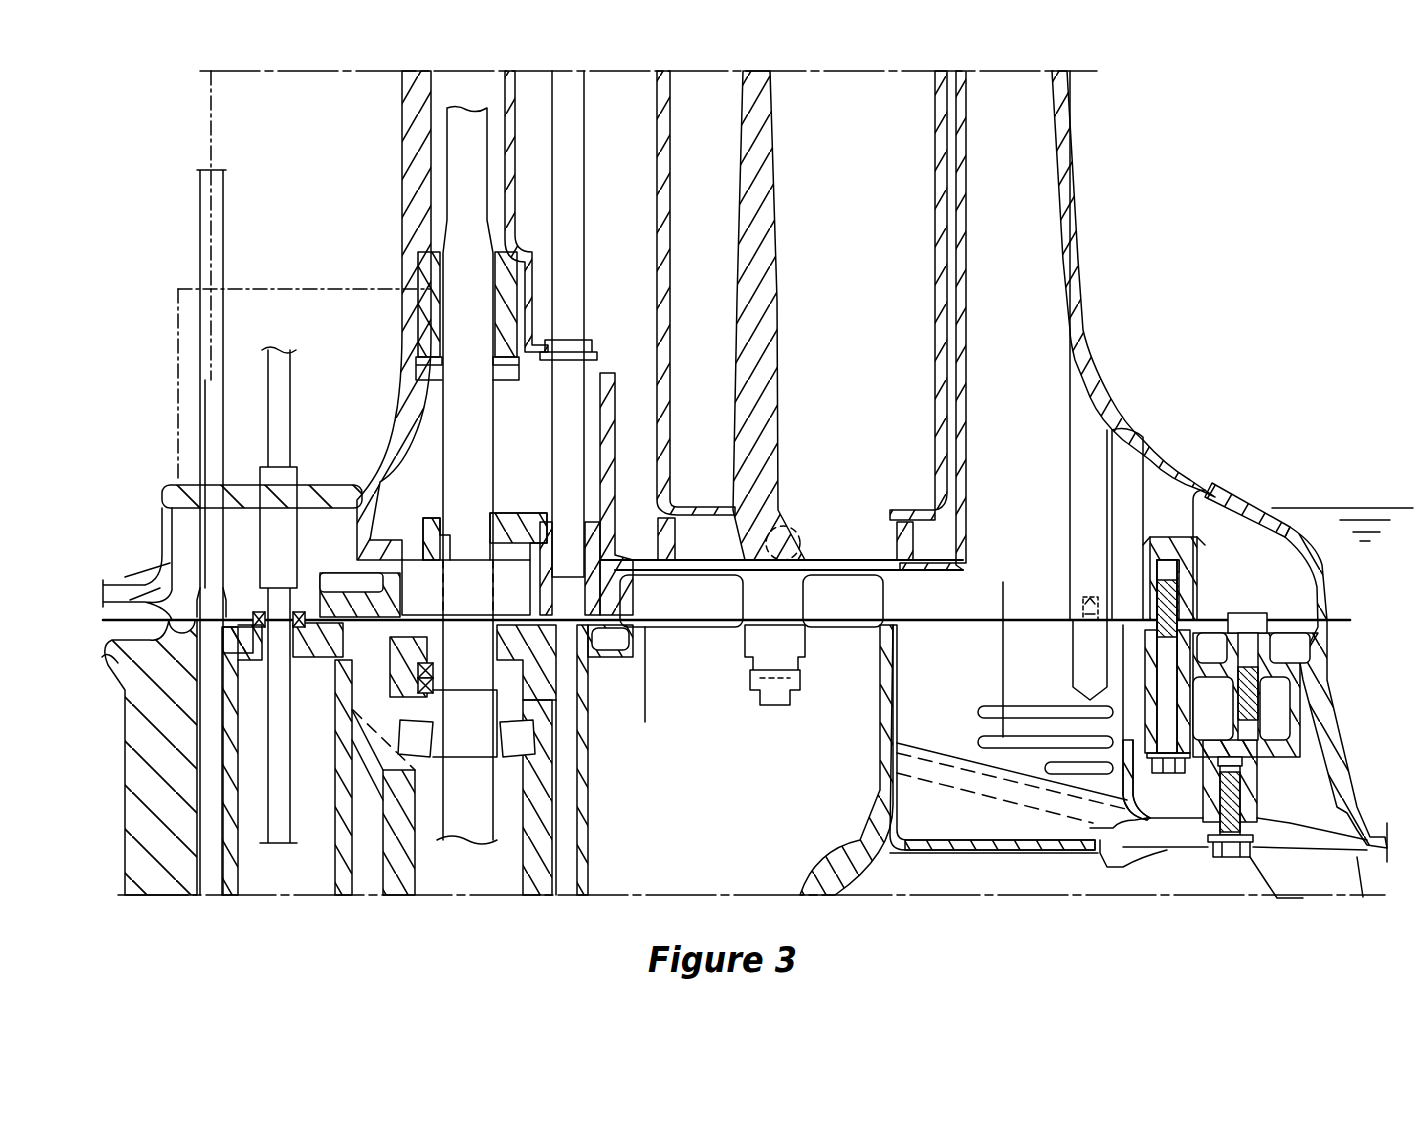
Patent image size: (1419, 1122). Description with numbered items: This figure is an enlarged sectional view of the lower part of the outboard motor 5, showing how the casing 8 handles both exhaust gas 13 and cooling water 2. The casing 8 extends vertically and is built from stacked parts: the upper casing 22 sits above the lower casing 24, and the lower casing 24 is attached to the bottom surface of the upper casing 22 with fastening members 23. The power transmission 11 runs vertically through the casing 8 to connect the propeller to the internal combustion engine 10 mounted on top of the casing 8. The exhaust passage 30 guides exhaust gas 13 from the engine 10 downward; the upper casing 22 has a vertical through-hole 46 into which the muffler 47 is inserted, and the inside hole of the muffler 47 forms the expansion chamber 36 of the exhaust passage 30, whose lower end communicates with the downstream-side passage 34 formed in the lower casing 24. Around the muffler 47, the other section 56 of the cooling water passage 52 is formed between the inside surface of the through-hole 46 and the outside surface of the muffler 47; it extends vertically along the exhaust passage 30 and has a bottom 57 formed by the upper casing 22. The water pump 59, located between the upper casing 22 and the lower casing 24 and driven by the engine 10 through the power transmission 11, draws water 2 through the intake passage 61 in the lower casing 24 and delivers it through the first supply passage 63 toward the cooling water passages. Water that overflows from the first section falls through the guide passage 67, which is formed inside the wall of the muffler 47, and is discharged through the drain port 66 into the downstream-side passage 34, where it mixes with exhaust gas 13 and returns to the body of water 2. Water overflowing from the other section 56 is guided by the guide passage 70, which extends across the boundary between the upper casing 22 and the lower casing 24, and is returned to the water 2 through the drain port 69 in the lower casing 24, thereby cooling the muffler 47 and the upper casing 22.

The water 2 is at (1335, 508).
The outboard motor 5 is at (1294, 160).
The casing 8 is at (1268, 240).
The internal combustion engine 10 is at (118, 618).
The power transmission 11 is at (460, 155).
The exhaust gas 13 is at (865, 345).
The upper casing 22 is at (1098, 293).
The fastening members 23 is at (1168, 773).
The lower casing 24 is at (1000, 866).
The exhaust passage 30 is at (925, 338).
The downstream-side passage 34 is at (880, 883).
The expansion chamber 36 is at (854, 158).
The through-hole 46 is at (950, 143).
The muffler 47 is at (972, 216).
The cooling water passage 52 is at (632, 240).
The other section of the cooling water passage 56 is at (586, 343).
The bottom 57 is at (668, 627).
The water pump 59 is at (468, 580).
The intake passage 61 is at (565, 783).
The first supply passage 63 is at (612, 270).
The drain port 66 is at (718, 535).
The guide passage 67 is at (696, 315).
The drain port 69 is at (1042, 748).
The guide passage 70 is at (1104, 345).